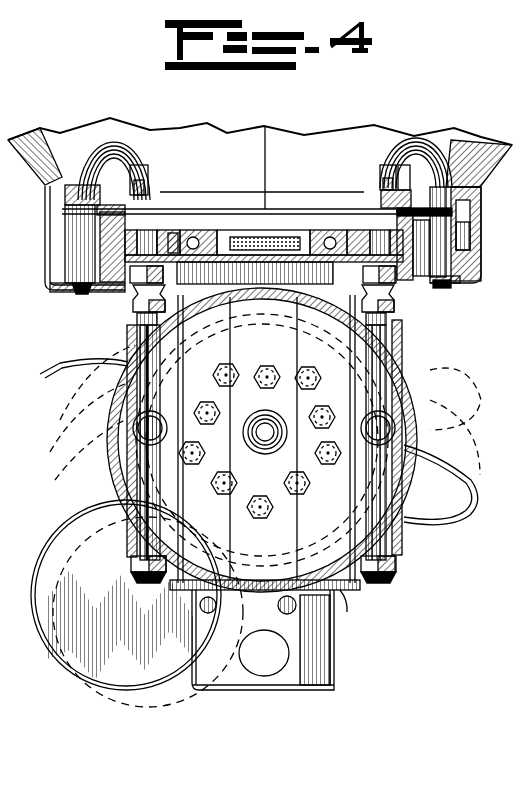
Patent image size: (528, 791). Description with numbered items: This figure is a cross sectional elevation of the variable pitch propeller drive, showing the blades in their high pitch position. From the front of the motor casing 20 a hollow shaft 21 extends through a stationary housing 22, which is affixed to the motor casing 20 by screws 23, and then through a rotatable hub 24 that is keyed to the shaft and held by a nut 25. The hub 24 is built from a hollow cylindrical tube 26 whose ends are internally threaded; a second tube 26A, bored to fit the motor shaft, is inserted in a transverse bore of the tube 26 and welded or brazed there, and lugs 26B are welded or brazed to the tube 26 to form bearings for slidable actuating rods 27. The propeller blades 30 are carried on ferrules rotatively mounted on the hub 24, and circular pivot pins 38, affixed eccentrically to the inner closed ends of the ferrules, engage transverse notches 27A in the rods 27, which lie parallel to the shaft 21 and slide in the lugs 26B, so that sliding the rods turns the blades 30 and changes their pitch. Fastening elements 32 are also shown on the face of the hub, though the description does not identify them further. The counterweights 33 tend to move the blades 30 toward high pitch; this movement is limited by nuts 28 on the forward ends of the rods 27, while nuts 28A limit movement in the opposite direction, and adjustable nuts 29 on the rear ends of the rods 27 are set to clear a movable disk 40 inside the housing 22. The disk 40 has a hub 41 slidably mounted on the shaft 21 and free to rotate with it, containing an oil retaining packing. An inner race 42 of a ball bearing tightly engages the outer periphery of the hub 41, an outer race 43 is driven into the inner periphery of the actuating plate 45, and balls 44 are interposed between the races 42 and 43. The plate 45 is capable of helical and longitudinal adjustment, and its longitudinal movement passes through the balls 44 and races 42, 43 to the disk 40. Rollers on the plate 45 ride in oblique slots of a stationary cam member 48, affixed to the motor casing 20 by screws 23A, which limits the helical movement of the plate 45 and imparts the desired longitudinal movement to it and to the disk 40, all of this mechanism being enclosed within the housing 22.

The motor casing 20 is at (178, 135).
The hollow shaft 21 is at (270, 276).
The stationary housing 22 is at (45, 282).
The screws 23 is at (76, 290).
The screws 23A is at (465, 248).
The rotatable hub 24 is at (215, 440).
The nut 25 is at (336, 686).
The hollow cylindrical tube 26 is at (110, 436).
The tube 26A is at (345, 612).
The lugs 26B is at (127, 345).
The actuating rods 27 is at (137, 320).
The transverse notches 27A is at (385, 445).
The nuts 28 is at (140, 570).
The nuts 28A is at (133, 304).
The adjustable nuts 29 is at (130, 276).
The propeller blades 30 is at (58, 366).
The bolt heads 32 is at (300, 366).
The counterweights 33 is at (60, 664).
The circular pivot pins 38 is at (133, 426).
The movable disk 40 is at (180, 266).
The hub 41 is at (300, 232).
The inner race 42 is at (222, 236).
The outer race 43 is at (193, 238).
The balls 44 is at (212, 238).
The actuating plate 45 is at (178, 232).
The stationary cam member 48 is at (105, 210).